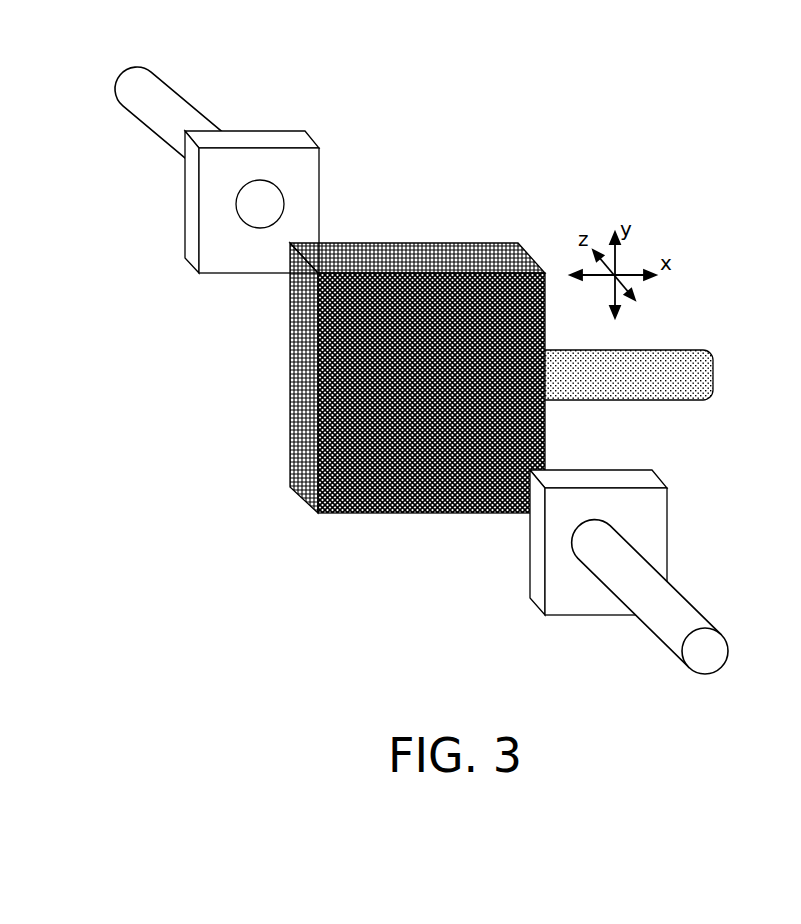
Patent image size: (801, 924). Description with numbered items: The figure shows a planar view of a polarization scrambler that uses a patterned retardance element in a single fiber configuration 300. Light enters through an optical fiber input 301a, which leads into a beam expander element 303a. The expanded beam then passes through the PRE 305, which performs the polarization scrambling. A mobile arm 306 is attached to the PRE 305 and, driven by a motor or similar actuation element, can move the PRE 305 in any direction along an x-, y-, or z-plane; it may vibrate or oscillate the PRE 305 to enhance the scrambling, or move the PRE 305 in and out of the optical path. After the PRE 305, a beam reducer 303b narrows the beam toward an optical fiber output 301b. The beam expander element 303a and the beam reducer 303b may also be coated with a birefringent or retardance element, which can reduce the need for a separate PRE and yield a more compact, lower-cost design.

The single fiber configuration 300 is at (680, 136).
The optical fiber input 301a is at (125, 100).
The optical fiber output 301b is at (695, 615).
The beam expander element 303a is at (307, 138).
The beam reducer 303b is at (668, 523).
The patterned retardance element 305 is at (287, 428).
The mobile arm 306 is at (670, 356).